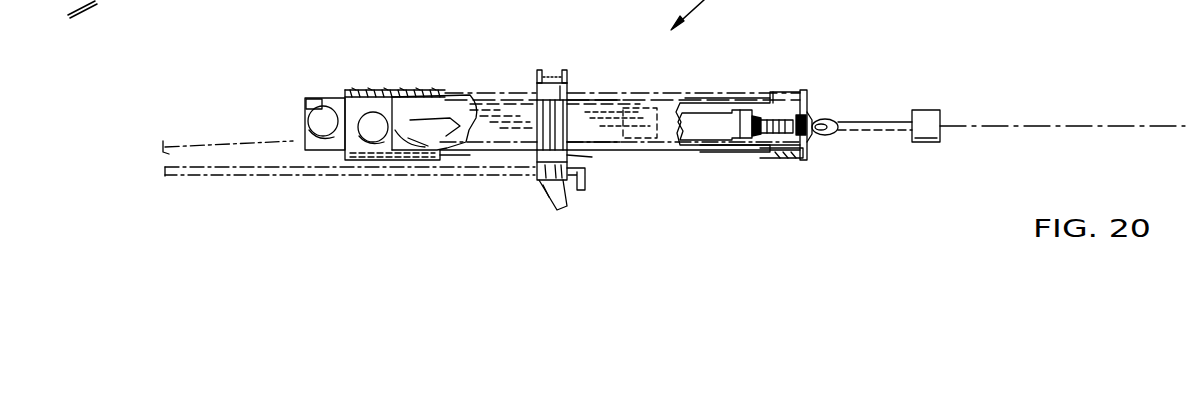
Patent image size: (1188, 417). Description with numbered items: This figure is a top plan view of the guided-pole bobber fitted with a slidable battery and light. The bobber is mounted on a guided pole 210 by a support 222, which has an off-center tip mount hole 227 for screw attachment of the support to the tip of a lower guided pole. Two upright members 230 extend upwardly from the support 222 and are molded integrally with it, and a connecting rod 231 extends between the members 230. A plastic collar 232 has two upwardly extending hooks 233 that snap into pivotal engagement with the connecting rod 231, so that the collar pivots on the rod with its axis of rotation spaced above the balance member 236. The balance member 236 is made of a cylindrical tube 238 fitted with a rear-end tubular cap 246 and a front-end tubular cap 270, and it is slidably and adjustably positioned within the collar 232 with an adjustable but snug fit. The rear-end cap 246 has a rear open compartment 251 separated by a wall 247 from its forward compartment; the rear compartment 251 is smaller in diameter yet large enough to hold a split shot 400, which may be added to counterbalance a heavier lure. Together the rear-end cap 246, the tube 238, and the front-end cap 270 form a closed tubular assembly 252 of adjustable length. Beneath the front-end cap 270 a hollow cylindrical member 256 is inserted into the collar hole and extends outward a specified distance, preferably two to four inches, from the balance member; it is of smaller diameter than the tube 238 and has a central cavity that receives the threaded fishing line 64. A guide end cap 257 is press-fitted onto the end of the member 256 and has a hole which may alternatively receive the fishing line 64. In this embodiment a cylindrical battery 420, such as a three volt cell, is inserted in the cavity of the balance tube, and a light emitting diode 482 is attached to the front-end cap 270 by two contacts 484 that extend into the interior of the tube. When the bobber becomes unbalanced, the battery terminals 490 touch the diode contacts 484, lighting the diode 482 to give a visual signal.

The fishing line 64 is at (1028, 127).
The guided pole 210 is at (85, 20).
The support 222 is at (557, 68).
The off-center tip mount hole 227 is at (583, 191).
The upright members 230 is at (550, 73).
The connecting rod 231 is at (598, 120).
The collar 232 is at (568, 160).
The hooks 233 is at (568, 118).
The balance member 236 is at (722, 100).
The cylindrical tube 238 is at (685, 100).
The rear-end tubular cap 246 is at (322, 102).
The wall 247 is at (370, 108).
The rear open compartment 251 is at (306, 113).
The tubular assembly 252 is at (752, 156).
The hollow cylindrical member 256 is at (860, 118).
The guide end cap 257 is at (925, 110).
The front-end tubular cap 270 is at (810, 110).
The split shot 400 is at (293, 140).
The cylindrical battery 420 is at (705, 150).
The light emitting diode 482 is at (829, 135).
The diode contacts 484 is at (795, 150).
The battery terminals 490 is at (768, 108).